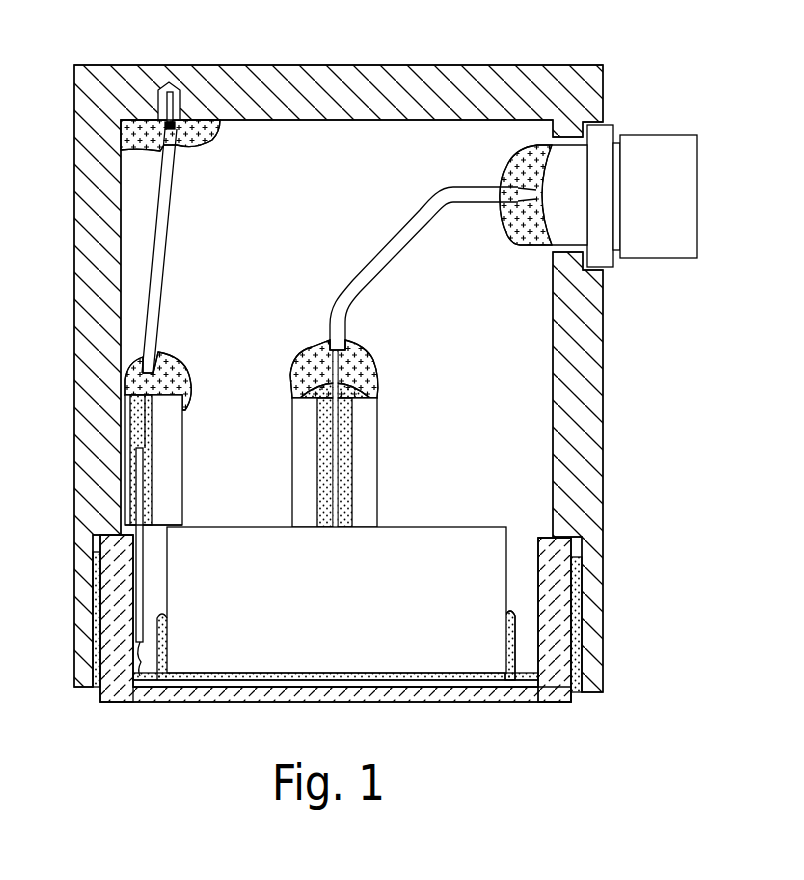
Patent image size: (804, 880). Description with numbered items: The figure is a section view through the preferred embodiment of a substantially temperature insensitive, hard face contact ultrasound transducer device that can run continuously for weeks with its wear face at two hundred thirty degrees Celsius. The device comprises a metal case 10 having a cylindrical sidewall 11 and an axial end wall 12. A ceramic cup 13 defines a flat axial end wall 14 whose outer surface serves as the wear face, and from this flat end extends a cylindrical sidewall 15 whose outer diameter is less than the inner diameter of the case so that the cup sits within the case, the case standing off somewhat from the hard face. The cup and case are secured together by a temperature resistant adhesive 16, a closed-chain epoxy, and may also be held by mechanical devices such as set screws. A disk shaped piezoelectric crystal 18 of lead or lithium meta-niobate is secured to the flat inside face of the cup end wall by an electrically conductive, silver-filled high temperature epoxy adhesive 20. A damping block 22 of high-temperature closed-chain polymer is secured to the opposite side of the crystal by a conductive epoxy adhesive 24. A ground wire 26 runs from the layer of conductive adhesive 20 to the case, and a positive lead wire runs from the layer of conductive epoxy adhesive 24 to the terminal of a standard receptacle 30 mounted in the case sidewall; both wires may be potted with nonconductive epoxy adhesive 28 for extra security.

The metal case 10 is at (370, 346).
The cylindrical sidewall 11 is at (596, 530).
The housing top wall 12 is at (331, 66).
The ceramic cup 13 is at (557, 690).
The flat axial end wall 14 is at (487, 701).
The cylindrical sidewall 15 is at (556, 622).
The temperature resistant adhesive 16 is at (98, 631).
The piezoelectric crystal 18 is at (267, 686).
The high temperature epoxy adhesive 20 is at (190, 690).
The damping block 22 is at (357, 591).
The conductive epoxy adhesive 24 is at (362, 677).
The ground wire 26 is at (149, 559).
The nonconductive epoxy adhesive 28 is at (210, 138).
The standard receptacle 30 is at (698, 166).